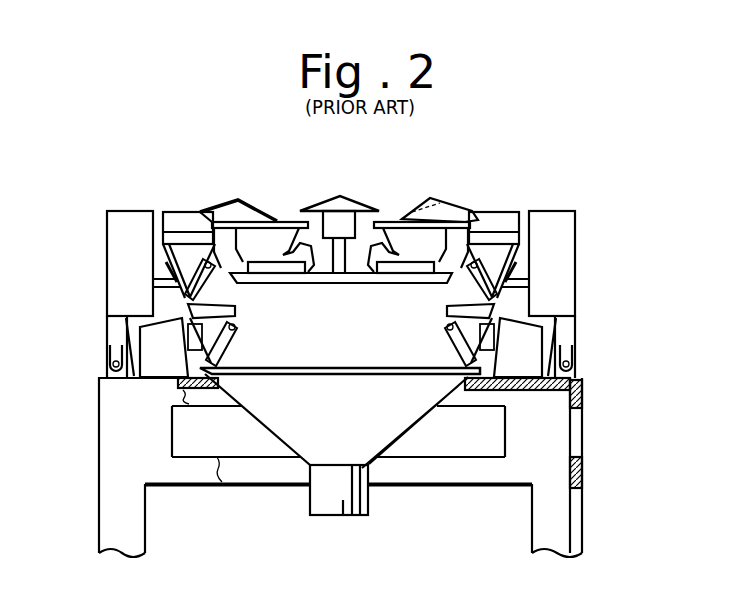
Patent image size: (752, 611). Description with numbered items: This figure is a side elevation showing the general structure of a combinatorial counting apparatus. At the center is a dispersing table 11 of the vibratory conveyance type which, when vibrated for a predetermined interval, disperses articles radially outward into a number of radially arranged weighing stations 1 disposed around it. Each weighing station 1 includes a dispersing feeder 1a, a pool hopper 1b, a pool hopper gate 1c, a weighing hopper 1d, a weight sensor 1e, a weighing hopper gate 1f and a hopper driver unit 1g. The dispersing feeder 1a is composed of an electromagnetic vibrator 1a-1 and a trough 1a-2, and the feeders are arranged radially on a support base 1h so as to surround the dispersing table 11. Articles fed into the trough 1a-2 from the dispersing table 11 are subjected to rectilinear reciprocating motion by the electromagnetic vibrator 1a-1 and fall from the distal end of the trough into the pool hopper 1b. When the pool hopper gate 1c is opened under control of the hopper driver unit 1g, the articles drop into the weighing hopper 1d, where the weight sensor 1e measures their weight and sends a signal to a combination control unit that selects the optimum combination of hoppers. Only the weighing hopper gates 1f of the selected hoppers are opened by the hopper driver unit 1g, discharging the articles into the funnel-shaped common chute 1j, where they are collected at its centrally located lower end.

The weighing station 1 is at (348, 235).
The dispersing feeder 1a is at (372, 208).
The electromagnetic vibrator 1a-1 is at (270, 237).
The trough 1a-2 is at (228, 209).
The pool hopper 1b is at (168, 247).
The pool hopper gate 1c is at (212, 270).
The weighing hopper 1d is at (237, 308).
The weight sensor 1e is at (150, 347).
The weighing hopper gate 1f is at (236, 346).
The hopper driver unit 1g is at (115, 266).
The support base 1h is at (337, 283).
The common chute 1j is at (303, 442).
The dispersing table 11 is at (365, 208).